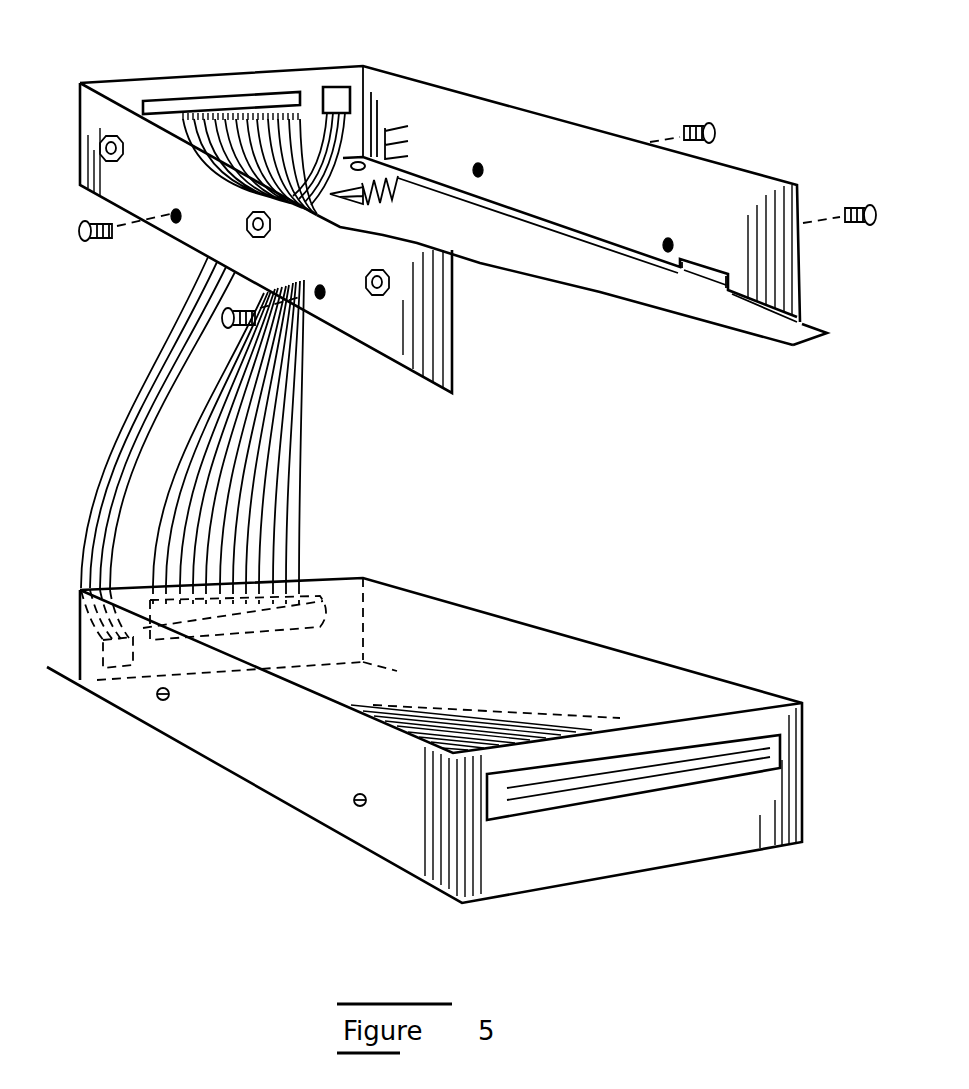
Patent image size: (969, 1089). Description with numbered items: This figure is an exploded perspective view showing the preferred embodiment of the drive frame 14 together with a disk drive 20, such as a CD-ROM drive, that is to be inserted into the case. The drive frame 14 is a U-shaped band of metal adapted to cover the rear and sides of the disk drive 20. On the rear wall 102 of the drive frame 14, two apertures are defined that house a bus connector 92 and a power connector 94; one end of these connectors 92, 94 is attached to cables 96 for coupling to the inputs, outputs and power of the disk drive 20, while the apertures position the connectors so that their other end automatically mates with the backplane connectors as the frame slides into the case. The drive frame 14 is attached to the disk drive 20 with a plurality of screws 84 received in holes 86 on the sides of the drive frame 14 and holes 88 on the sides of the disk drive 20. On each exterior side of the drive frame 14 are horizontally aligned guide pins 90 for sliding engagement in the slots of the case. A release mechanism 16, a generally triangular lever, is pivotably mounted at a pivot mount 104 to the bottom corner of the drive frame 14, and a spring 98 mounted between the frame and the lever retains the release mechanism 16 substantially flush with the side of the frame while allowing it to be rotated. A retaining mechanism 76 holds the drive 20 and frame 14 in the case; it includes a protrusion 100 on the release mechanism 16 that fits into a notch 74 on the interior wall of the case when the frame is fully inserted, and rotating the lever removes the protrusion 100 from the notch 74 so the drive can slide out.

The drive frame 14 is at (762, 170).
The release mechanism 16 is at (818, 334).
The disk drive 20 is at (730, 685).
The notch 74 is at (700, 266).
The retaining mechanism 76 is at (724, 325).
The screws 84 is at (95, 243).
The holes 86 is at (179, 208).
The holes 88 is at (157, 700).
The guide pins 90 is at (99, 150).
The bus connector 92 is at (250, 92).
The power connector 94 is at (337, 87).
The cables 96 is at (172, 340).
The spring 98 is at (378, 186).
The protrusion 100 is at (700, 281).
The rear wall 102 is at (112, 82).
The pivot mount 104 is at (383, 135).